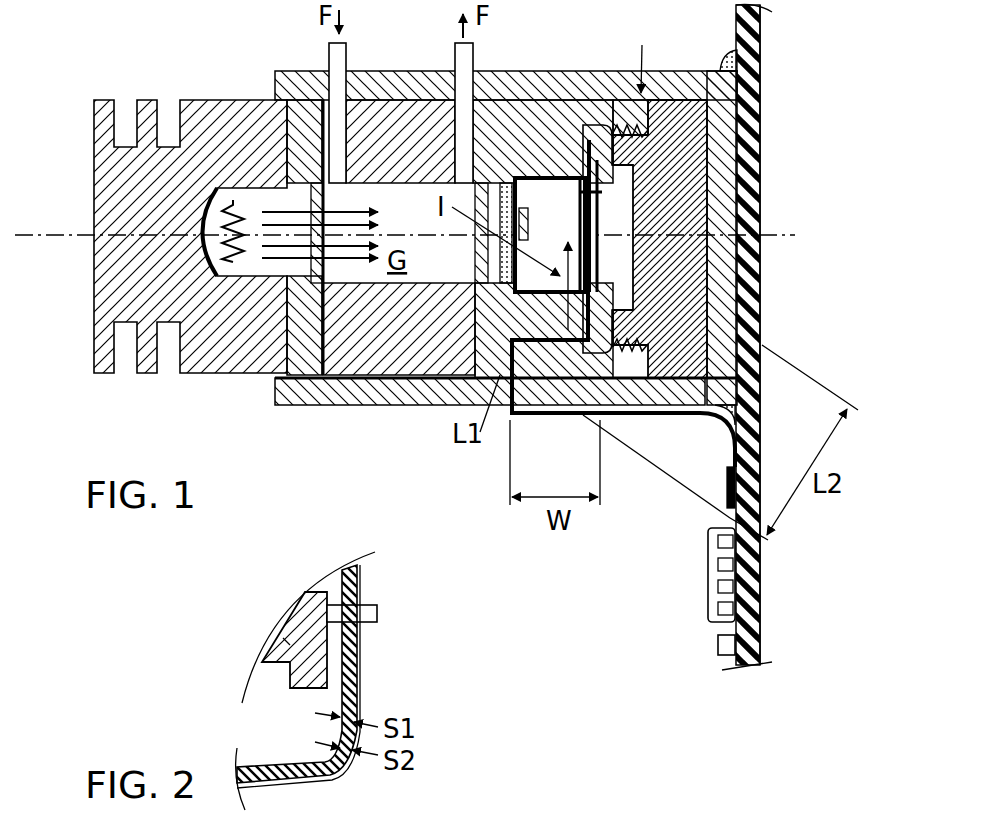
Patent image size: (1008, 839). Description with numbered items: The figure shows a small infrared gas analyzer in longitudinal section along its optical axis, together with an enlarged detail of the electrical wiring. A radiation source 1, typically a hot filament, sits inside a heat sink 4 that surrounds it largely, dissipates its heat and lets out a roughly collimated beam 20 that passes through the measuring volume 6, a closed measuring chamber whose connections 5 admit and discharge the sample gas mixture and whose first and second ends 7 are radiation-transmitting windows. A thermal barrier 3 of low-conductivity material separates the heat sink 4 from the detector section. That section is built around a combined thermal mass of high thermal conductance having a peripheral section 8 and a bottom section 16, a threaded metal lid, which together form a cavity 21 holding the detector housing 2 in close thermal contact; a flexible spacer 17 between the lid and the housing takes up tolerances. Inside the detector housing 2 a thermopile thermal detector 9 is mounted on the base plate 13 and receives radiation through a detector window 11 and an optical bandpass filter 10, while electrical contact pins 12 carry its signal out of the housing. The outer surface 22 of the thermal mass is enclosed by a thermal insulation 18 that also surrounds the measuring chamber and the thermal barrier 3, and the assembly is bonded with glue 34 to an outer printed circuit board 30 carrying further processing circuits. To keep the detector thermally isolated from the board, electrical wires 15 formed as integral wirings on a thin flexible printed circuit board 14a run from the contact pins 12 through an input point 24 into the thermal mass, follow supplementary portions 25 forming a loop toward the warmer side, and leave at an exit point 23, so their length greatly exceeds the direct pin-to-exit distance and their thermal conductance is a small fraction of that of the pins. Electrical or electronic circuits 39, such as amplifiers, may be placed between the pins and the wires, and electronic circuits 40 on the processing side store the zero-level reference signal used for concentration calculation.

In FIG. 1, the radiation source 1 is at (233, 200).
In FIG. 1, the detector housing 2 is at (553, 90).
In FIG. 2, the detector housing 2 is at (300, 622).
In FIG. 1, the thermal barrier 3 is at (303, 140).
In FIG. 1, the heat sink 4 is at (113, 212).
In FIG. 1, the connections 5 is at (339, 60).
In FIG. 1, the measuring volume 6 is at (410, 215).
In FIG. 1, the first and second ends 7 is at (330, 268).
In FIG. 1, the peripheral section 8 is at (533, 128).
In FIG. 1, the thermal detector 9 is at (573, 87).
In FIG. 1, the optical bandpass filter 10 is at (477, 262).
In FIG. 1, the detector window 11 is at (515, 120).
In FIG. 1, the electrical contact pins 12 is at (778, 400).
In FIG. 2, the electrical contact pins 12 is at (365, 612).
In FIG. 1, the base plate 13 is at (590, 97).
In FIG. 2, the base plate 13 is at (286, 641).
In FIG. 1, the flexible printed circuit board 14a is at (665, 212).
In FIG. 2, the flexible printed circuit board 14a is at (352, 656).
In FIG. 1, the electrical wires 15 is at (627, 417).
In FIG. 2, the electrical wires 15 is at (358, 698).
In FIG. 1, the bottom section 16 is at (592, 265).
In FIG. 1, the flexible spacer 17 is at (600, 228).
In FIG. 1, the thermal insulation 18 is at (662, 83).
In FIG. 1, the beam 20 is at (268, 262).
In FIG. 1, the cavity 21 is at (588, 415).
In FIG. 1, the outer surface 22 is at (645, 85).
In FIG. 1, the exit point 23 is at (497, 375).
In FIG. 1, the input point 24 is at (668, 300).
In FIG. 1, the supplementary portions 25 is at (540, 415).
In FIG. 1, the outer printed circuit board 30 is at (750, 625).
In FIG. 1, the glue 34 is at (742, 38).
In FIG. 1, the electrical and/or electronic circuits 39 is at (706, 560).
In FIG. 1, the electronic circuits 40 is at (718, 598).